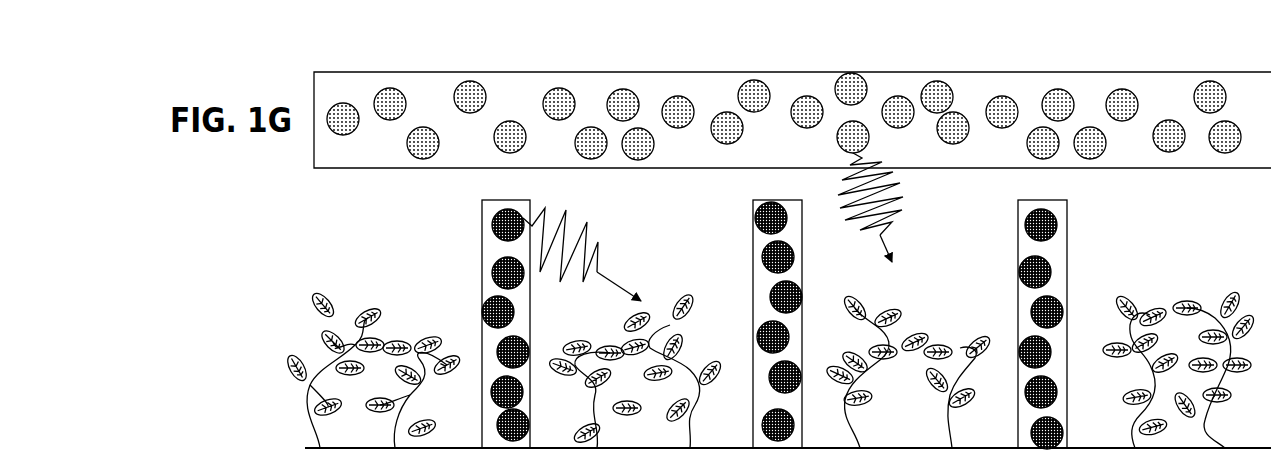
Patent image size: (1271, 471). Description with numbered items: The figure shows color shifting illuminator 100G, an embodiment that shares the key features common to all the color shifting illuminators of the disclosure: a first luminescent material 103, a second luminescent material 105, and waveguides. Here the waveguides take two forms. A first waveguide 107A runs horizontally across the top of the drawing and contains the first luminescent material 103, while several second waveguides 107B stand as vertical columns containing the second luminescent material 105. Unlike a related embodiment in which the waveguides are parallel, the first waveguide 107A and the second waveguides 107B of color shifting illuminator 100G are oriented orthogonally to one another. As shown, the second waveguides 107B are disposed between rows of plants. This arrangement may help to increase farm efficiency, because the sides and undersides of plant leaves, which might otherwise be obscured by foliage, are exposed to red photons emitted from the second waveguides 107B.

The color shifting illuminator 100G is at (354, 58).
The first luminescent material 103 is at (1169, 150).
The second luminescent material 105 is at (500, 275).
The first waveguide 107A is at (792, 121).
The second waveguides 107B is at (786, 324).